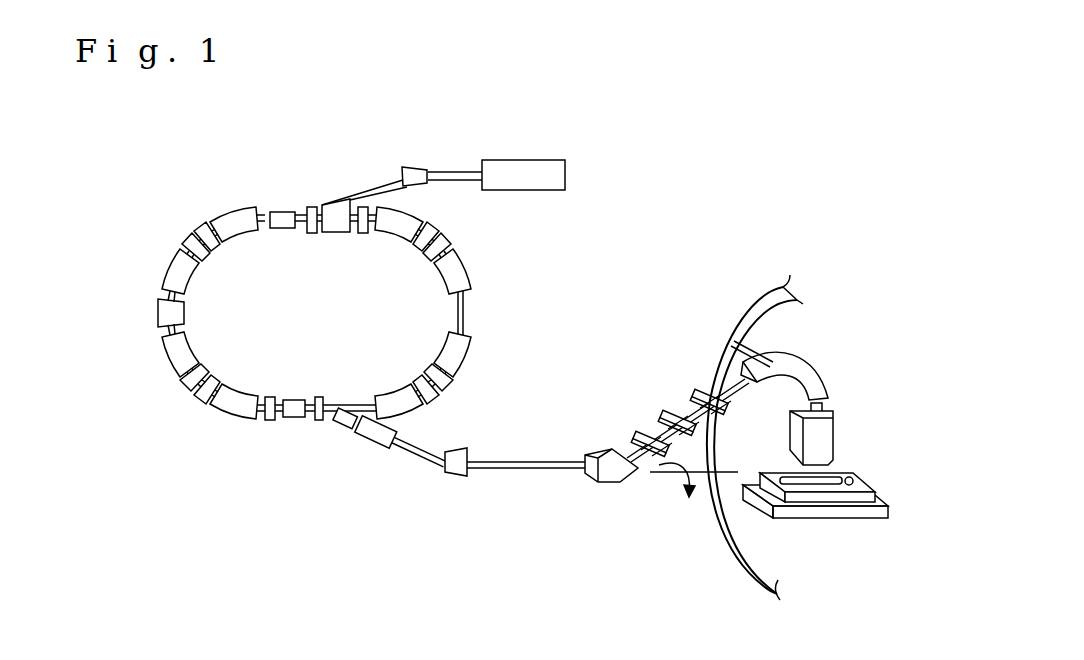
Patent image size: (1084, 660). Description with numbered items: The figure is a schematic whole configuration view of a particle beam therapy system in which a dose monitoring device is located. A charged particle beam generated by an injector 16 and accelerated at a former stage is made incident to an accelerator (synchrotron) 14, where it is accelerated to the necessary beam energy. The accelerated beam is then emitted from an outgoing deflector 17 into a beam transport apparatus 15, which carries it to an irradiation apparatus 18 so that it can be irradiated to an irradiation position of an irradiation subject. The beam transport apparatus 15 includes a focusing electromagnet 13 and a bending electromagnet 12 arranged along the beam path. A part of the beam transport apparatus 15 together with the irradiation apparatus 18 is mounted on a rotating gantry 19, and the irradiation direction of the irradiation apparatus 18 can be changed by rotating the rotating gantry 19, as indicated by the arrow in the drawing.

The bending electromagnet 12 is at (617, 483).
The focusing electromagnet 13 is at (667, 410).
The accelerator (synchrotron) 14 is at (187, 405).
The beam transport apparatus 15 is at (617, 435).
The injector 16 is at (570, 172).
The outgoing deflector 17 is at (337, 422).
The irradiation apparatus 18 is at (835, 432).
The rotating gantry 19 is at (723, 552).